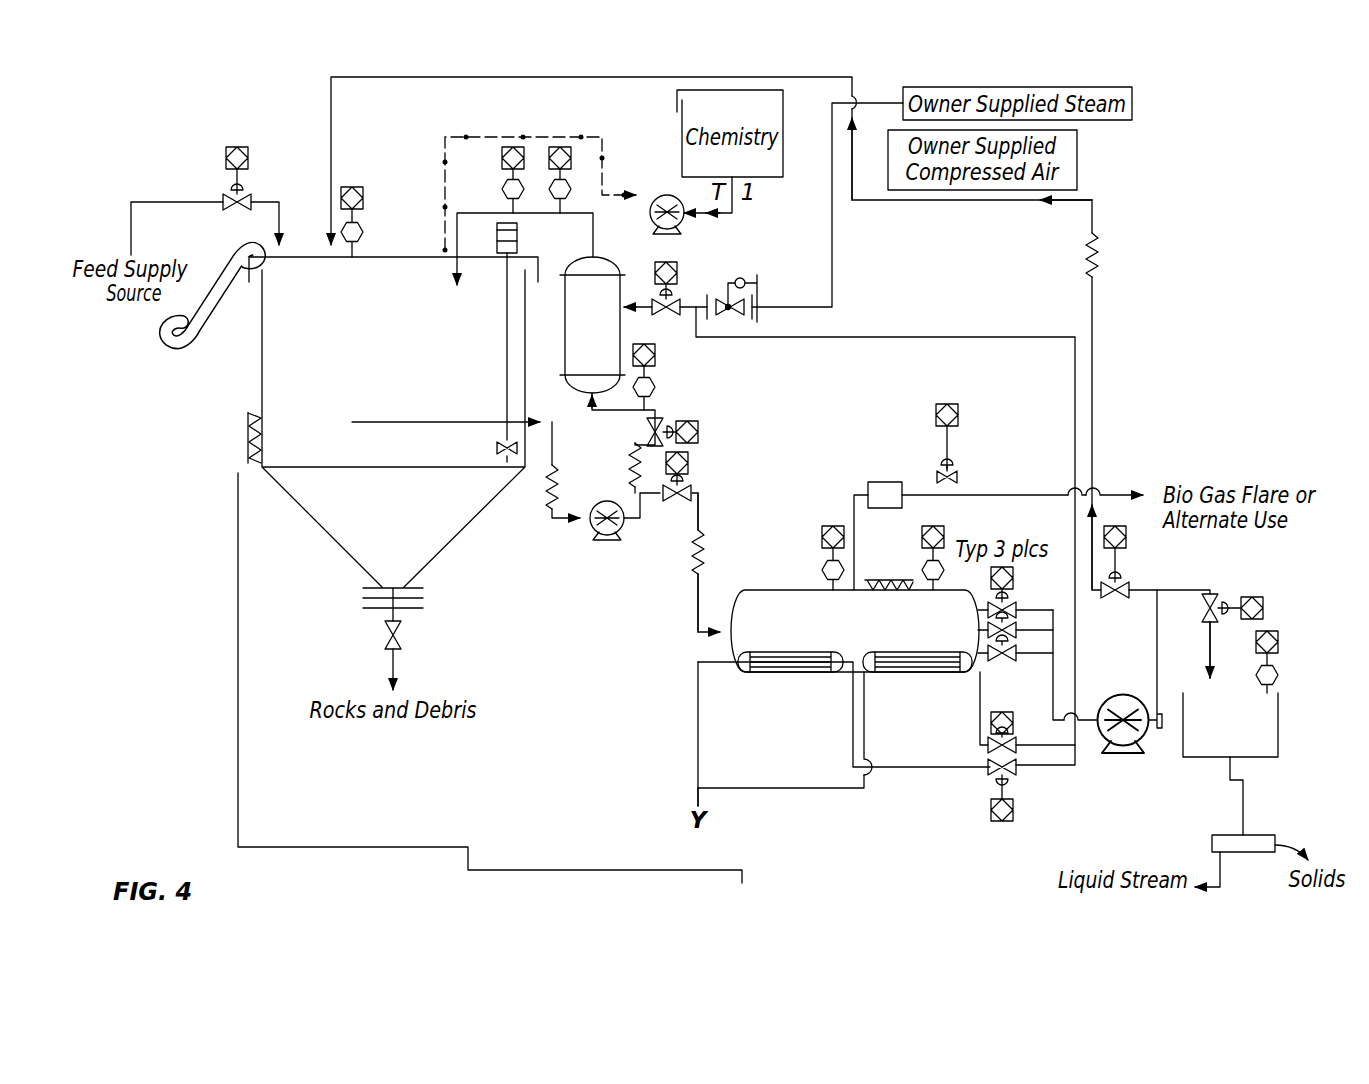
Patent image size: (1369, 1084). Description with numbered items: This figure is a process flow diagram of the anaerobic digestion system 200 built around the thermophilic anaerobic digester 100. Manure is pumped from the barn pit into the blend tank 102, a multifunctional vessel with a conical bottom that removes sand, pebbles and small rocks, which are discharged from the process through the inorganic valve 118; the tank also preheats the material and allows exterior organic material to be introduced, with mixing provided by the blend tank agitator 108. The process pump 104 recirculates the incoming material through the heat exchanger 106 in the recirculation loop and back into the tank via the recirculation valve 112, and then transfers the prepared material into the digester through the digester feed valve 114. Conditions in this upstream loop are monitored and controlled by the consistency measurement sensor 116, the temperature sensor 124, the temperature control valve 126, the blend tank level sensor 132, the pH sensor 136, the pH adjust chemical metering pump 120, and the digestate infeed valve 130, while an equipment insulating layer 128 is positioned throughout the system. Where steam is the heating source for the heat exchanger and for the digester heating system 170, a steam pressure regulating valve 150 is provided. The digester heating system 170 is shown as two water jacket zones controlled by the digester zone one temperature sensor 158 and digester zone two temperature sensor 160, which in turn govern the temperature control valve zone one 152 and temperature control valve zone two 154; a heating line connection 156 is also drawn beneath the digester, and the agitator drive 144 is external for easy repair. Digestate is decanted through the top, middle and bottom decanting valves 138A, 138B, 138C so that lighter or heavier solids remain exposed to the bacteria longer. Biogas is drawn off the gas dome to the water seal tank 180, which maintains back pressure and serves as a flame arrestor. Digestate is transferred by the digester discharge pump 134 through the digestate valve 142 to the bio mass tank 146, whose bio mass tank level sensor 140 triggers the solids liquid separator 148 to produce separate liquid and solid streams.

The thermophilic anaerobic digester 100 is at (755, 640).
The blend tank 102 is at (323, 254).
The process pump 104 is at (607, 500).
The heat exchanger 106 is at (598, 265).
The blend tank agitator 108 is at (518, 250).
The recirculation valve 112 is at (664, 425).
The digester feed valve 114 is at (686, 490).
The consistency measurement sensor 116 is at (656, 388).
The inorganic valve 118 is at (390, 637).
The pH adjust chemical metering pump 120 is at (665, 195).
The temperature sensor 124 is at (560, 146).
The temperature control valve 126 is at (678, 275).
The equipment insulating layer 128 is at (248, 413).
The digestate infeed valve 130 is at (1127, 538).
The blend tank level sensor 132 is at (352, 186).
The digester discharge pump 134 is at (1123, 694).
The pH sensor 136 is at (513, 146).
The top decanting valve 138A is at (1008, 610).
The middle decanting valve 138B is at (1008, 630).
The bottom decanting valve 138C is at (1008, 653).
The bio mass tank level sensor 140 is at (1278, 642).
The digestate valve 142 is at (1216, 602).
The agitator drive 144 is at (735, 630).
The bio mass tank 146 is at (1279, 727).
The solids liquid separator 148 is at (1243, 835).
The steam pressure regulating valve 150 is at (740, 300).
The temperature control valve zone one 152 is at (992, 810).
The temperature control valve zone two 154 is at (992, 725).
The heating water line Y 156 is at (688, 824).
The digester zone one temperature sensor 158 is at (833, 526).
The digester zone two temperature sensor 160 is at (933, 526).
The digester heating system 170 is at (790, 663).
The water seal tank 180 is at (885, 482).
The anaerobic digestion system 200 is at (410, 848).